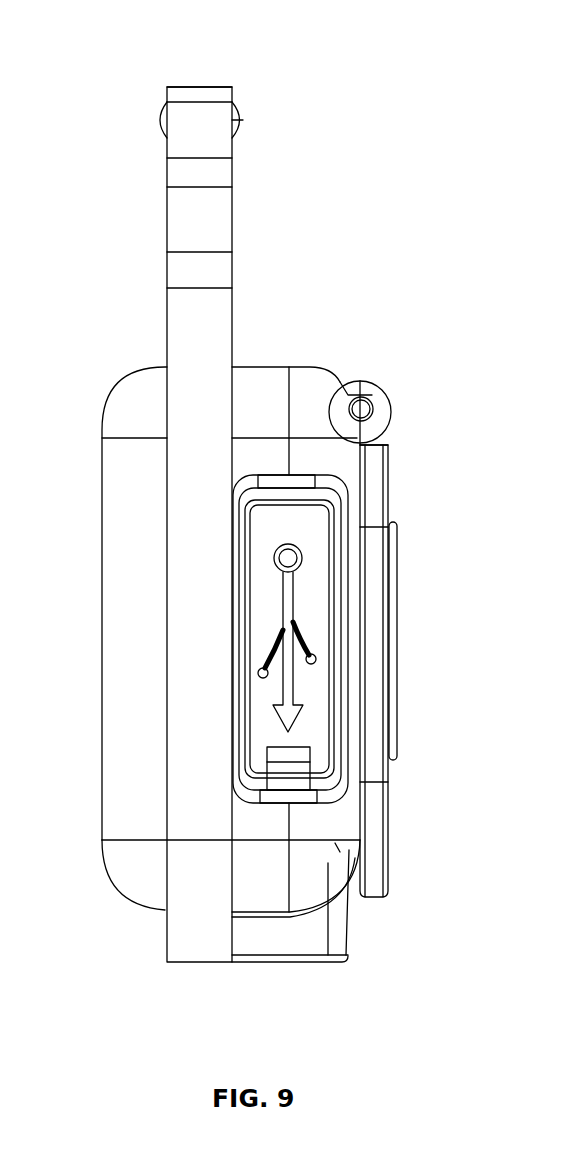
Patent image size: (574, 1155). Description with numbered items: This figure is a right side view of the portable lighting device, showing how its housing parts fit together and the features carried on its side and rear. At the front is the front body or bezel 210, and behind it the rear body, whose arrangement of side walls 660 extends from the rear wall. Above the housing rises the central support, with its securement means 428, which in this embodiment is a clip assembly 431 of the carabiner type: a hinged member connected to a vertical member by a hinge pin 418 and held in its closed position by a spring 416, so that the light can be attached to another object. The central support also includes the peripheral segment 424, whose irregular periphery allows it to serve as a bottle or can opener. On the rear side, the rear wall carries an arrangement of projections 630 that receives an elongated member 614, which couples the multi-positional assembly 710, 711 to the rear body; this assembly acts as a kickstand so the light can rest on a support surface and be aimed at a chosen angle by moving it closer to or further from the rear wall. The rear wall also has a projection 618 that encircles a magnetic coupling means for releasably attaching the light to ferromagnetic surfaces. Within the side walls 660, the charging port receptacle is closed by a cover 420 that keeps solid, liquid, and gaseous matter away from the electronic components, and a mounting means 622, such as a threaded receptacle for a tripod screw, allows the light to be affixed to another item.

The securement means 428 is at (358, 46).
The clip assembly 431 is at (362, 42).
The front body or bezel 210 is at (118, 413).
The spring 416 is at (203, 86).
The hinge pin 418 is at (241, 107).
The peripheral segment 424 is at (237, 224).
The arrangement of projections 630 is at (372, 386).
The elongated member 614 is at (364, 407).
The multi-positional assembly 710 is at (383, 473).
The band link 711 is at (383, 473).
The projection 618 is at (398, 610).
The arrangement of side walls 660 is at (250, 897).
The cover 420 is at (303, 605).
The mounting means 622 is at (338, 960).